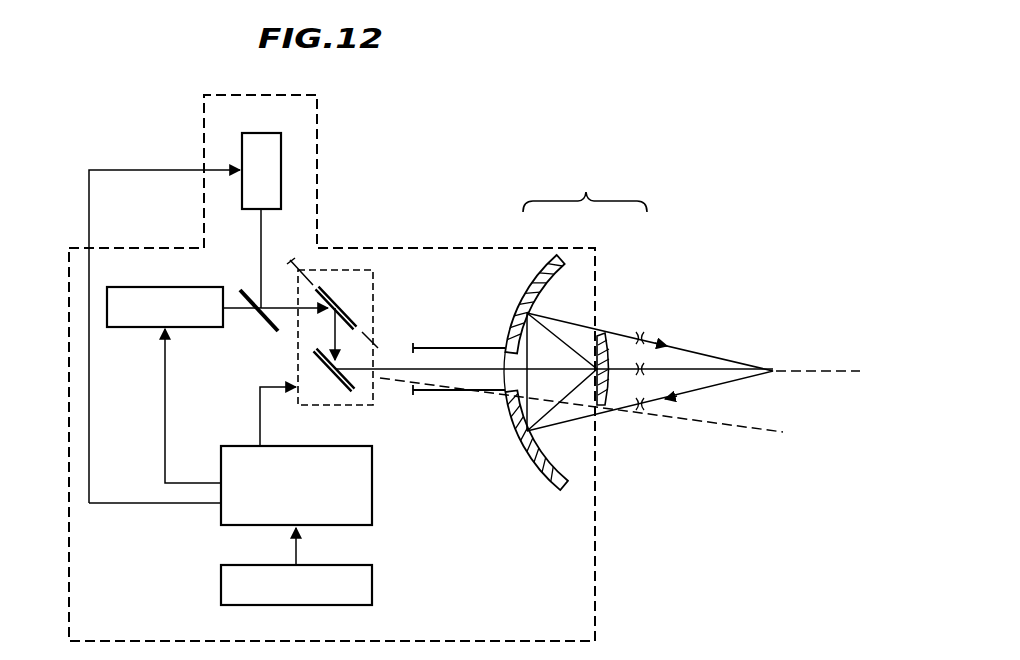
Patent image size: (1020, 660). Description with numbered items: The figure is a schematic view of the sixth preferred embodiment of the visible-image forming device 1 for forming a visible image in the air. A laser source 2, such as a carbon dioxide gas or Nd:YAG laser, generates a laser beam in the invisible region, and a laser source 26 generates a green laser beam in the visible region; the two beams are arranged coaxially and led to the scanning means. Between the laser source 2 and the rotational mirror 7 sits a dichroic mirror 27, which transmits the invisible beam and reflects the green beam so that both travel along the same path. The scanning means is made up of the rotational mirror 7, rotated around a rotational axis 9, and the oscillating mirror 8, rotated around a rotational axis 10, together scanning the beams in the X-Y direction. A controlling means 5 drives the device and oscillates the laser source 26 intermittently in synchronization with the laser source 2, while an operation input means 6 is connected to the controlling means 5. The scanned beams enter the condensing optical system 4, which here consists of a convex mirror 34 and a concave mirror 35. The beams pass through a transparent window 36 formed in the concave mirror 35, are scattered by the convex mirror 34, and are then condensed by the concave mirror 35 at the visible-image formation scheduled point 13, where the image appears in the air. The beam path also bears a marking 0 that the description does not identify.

The visible-image forming device 1 is at (456, 247).
The laser source 2 is at (133, 318).
The condensing optical system 4 is at (559, 324).
The controlling means 5 is at (370, 508).
The operation input means 6 is at (365, 583).
The rotational mirror 7 is at (348, 312).
The oscillating mirror 8 is at (345, 388).
The rotational axis 9 is at (367, 334).
The rotational axis 10 is at (330, 371).
The visible-image formation scheduled point 13 is at (773, 366).
The laser source 26 is at (272, 187).
The dichroic mirror 27 is at (262, 321).
The convex mirror 34 is at (607, 340).
The concave mirror 35 is at (521, 282).
The transparent window 36 is at (500, 378).
The optical axis 0 is at (463, 371).